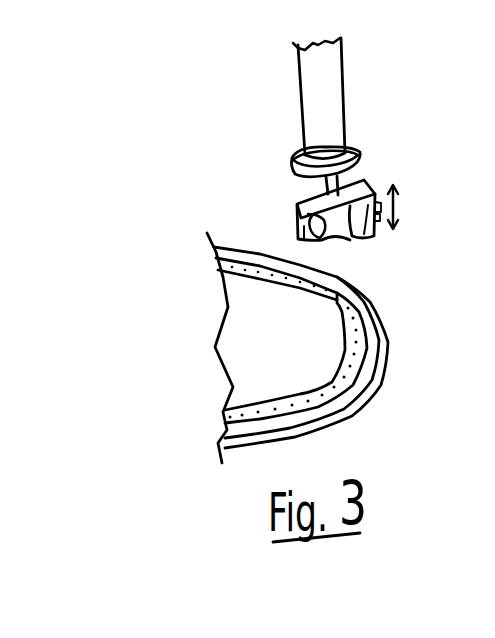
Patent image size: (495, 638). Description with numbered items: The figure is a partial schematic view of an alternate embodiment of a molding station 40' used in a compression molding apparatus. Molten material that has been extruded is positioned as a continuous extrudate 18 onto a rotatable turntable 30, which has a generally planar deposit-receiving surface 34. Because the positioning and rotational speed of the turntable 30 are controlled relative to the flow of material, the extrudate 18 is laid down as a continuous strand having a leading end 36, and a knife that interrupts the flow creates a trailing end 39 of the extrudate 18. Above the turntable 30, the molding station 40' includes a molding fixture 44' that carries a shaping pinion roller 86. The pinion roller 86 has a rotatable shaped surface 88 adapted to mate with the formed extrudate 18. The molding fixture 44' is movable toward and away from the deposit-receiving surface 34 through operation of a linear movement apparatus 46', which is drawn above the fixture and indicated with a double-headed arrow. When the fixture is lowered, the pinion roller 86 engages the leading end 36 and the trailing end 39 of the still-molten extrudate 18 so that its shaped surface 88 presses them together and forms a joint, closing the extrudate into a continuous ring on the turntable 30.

The molding station 40' is at (297, 146).
The linear movement apparatus 46' is at (353, 98).
The molding fixture 44' is at (350, 193).
The rotatable shaped surface 88 is at (299, 209).
The shaping pinion roller 86 is at (373, 237).
The extrudate 18 is at (224, 268).
The rotatable turntable 30 is at (378, 391).
The trailing end 39 is at (372, 329).
The leading end 36 is at (325, 289).
The deposit-receiving surface 34 is at (281, 393).